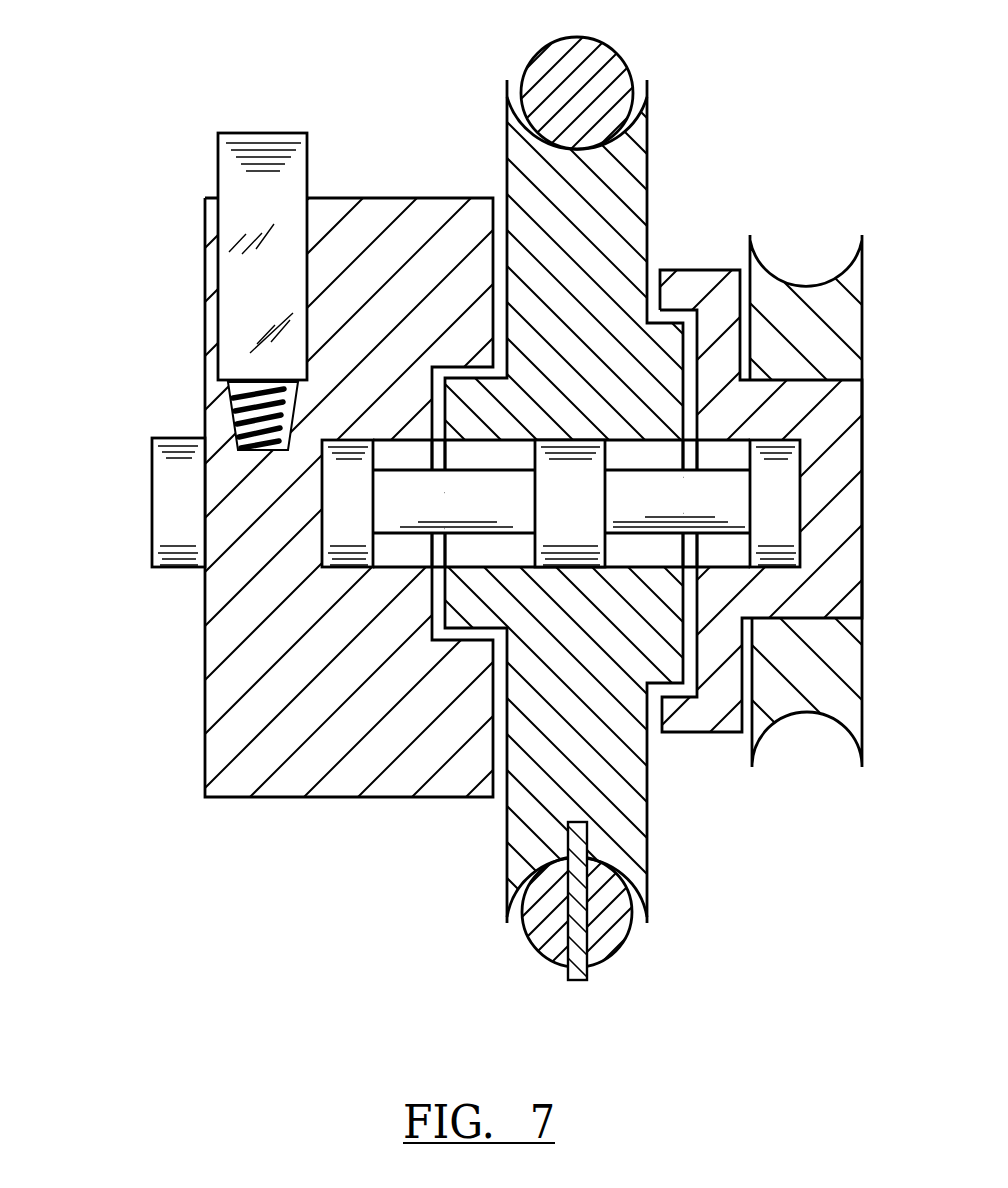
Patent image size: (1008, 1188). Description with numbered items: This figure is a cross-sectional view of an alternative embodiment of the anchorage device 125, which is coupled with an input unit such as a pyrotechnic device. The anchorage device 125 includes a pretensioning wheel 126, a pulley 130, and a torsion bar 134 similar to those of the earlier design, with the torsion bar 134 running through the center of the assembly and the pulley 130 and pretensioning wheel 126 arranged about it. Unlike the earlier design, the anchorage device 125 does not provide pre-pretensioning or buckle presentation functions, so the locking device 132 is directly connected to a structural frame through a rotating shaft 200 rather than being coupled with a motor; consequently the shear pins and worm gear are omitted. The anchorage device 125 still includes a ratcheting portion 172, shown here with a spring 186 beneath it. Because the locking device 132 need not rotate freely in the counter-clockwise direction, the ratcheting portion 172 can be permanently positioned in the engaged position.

The anchorage device 125 is at (761, 441).
The pretensioning wheel 126 is at (731, 254).
The pulley 130 is at (649, 170).
The locking device 132 is at (428, 198).
The torsion bar 134 is at (643, 468).
The ratcheting portion 172 is at (218, 170).
The spring 186 is at (228, 398).
The rotating shaft 200 is at (173, 438).